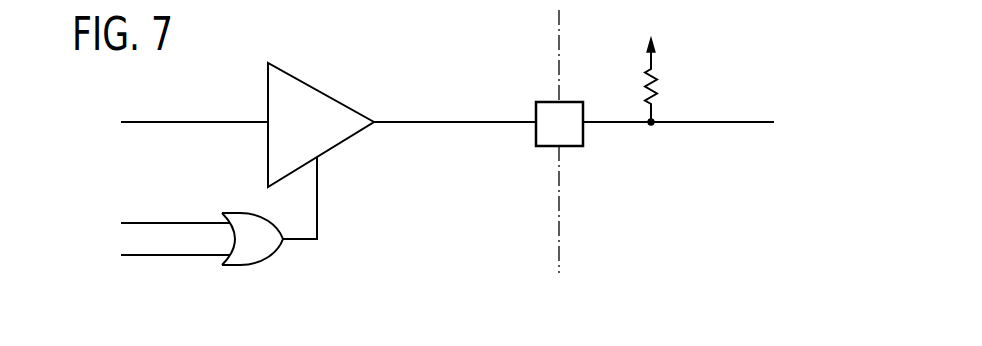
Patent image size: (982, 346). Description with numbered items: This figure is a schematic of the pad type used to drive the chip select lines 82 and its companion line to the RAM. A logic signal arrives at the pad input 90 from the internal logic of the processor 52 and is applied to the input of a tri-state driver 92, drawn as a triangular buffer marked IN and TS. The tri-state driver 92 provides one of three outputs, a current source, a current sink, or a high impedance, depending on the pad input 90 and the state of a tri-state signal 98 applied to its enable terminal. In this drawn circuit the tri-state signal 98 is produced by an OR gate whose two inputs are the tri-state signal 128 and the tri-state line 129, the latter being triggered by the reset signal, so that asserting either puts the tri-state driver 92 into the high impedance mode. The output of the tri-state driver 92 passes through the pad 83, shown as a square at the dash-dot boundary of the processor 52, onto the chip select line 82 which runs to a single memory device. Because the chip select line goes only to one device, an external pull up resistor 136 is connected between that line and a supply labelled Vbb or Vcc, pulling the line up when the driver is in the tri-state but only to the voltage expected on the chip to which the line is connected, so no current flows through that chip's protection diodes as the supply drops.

The pad input 90 is at (145, 122).
The tri-state driver 92 is at (309, 85).
The tri-state signal 98 is at (317, 196).
The tri-state signal 128 is at (155, 222).
The tri-state line 129 is at (132, 256).
The pad 83 is at (448, 152).
The processor 52 is at (574, 29).
The external pull up resistor 136 is at (678, 82).
The chip select line 82 is at (690, 122).